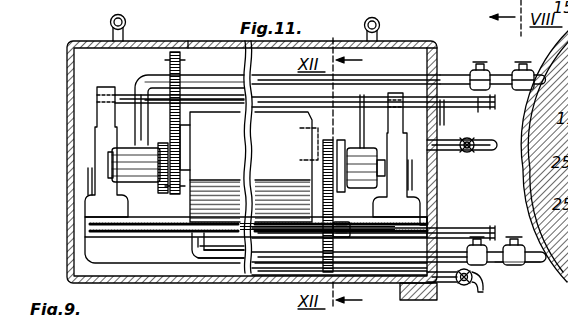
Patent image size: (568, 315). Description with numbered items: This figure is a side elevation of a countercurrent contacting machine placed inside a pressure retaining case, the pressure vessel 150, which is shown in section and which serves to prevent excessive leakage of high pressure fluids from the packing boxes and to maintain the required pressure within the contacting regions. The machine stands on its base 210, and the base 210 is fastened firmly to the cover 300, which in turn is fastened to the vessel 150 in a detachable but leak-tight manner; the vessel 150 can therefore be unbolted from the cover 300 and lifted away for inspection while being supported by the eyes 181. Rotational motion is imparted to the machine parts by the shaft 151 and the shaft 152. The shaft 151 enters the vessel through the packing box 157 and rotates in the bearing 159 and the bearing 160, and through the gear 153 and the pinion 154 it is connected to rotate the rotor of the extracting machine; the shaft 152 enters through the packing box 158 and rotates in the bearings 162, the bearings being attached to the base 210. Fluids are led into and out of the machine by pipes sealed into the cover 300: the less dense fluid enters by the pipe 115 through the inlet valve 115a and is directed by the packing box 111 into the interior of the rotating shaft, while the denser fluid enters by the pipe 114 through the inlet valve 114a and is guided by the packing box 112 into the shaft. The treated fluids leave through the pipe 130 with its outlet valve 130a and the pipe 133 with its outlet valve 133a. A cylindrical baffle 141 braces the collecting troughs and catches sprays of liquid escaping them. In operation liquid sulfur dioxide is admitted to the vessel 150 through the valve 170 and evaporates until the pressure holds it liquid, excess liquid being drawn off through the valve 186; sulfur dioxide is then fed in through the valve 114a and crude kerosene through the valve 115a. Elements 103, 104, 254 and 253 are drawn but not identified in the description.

The eyes 181 is at (110, 22).
The gear 153 is at (189, 47).
The pressure vessel 150 is at (68, 68).
The bearing 159 is at (125, 70).
The pipe 115 is at (204, 82).
The bearing 160 is at (411, 70).
The cover 300 is at (437, 55).
The valve 115a is at (548, 62).
The valve 114a is at (545, 110).
The shaft 151 is at (480, 108).
The packing box 157 is at (444, 112).
The valve 170 is at (472, 146).
The pipe 114 is at (372, 124).
The motor housing portion 254 is at (312, 154).
The cylindrical baffle 141 is at (240, 163).
The support pillar 103 is at (103, 140).
The support pillar 104 is at (405, 190).
The packing box 158 is at (444, 222).
The packing box 111 is at (152, 176).
The pinion 154 is at (168, 188).
The packing box 112 is at (360, 176).
The bearings 162 is at (345, 228).
The shaft 152 is at (470, 226).
The valve 133a is at (528, 228).
The base 210 is at (141, 222).
The pipe 130 is at (217, 258).
The pipe 133 is at (299, 242).
The pipe 253 is at (345, 265).
The valve 186 is at (464, 286).
The valve 130a is at (488, 270).